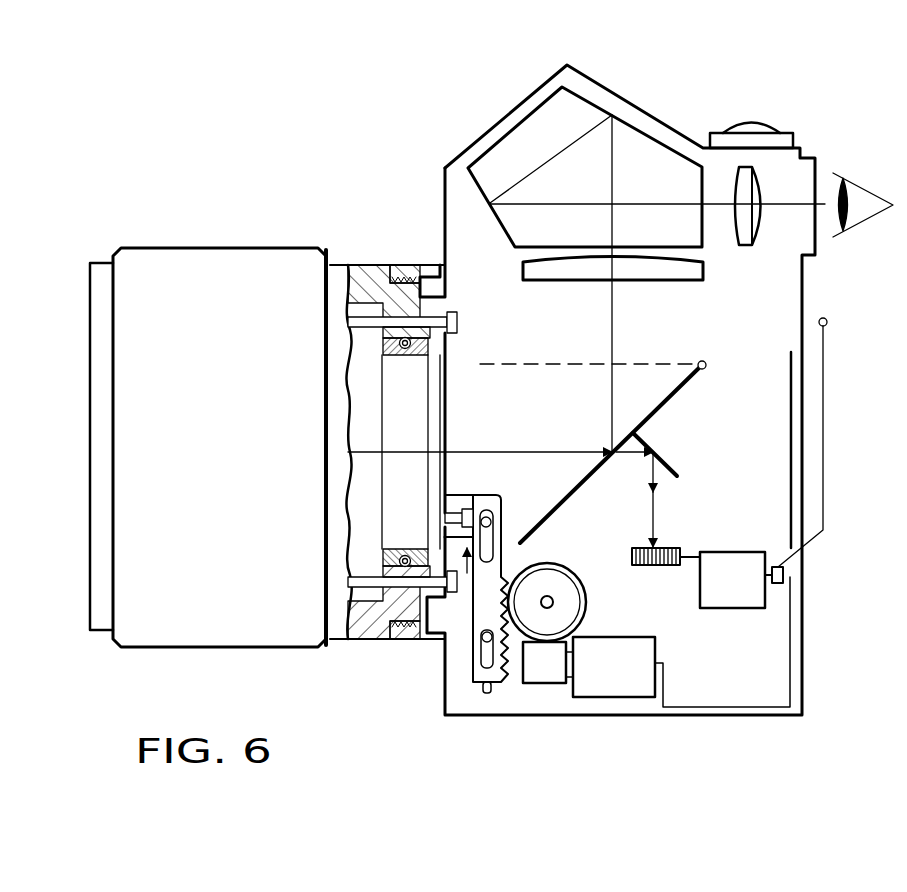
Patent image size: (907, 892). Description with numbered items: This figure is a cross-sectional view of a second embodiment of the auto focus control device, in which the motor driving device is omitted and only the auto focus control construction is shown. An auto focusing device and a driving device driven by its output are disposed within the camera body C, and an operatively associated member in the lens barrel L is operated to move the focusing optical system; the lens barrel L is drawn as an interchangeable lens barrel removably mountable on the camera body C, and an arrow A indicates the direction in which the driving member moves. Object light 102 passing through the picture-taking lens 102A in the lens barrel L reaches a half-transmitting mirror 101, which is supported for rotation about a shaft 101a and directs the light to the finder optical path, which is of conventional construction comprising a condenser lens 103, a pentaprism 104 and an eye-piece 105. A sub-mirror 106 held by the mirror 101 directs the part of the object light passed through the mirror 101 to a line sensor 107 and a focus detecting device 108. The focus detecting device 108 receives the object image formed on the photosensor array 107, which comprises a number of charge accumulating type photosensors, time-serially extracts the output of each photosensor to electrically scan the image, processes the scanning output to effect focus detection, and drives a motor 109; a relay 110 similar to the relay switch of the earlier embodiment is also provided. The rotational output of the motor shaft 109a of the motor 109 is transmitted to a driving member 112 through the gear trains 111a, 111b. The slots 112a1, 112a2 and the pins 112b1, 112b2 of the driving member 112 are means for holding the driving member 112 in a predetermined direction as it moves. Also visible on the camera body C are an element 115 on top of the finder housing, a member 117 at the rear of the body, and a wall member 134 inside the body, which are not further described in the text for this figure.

The camera body C is at (622, 100).
The lens barrel L is at (328, 647).
The direction of rack movement A is at (462, 587).
The picture-taking lens 102A is at (205, 248).
The object light 102 is at (493, 451).
The half-transmitting mirror 101 is at (645, 420).
The shaft 101a is at (705, 370).
The condenser lens 103 is at (673, 281).
The pentaprism 104 is at (520, 222).
The eye-piece 105 is at (757, 246).
The sub-mirror 106 is at (667, 456).
The line sensor 107 is at (669, 548).
The focus detecting device 108 is at (743, 551).
The motor 109 is at (623, 688).
The motor shaft 109a is at (571, 669).
The relay 110 is at (772, 586).
The gear train 111a is at (537, 668).
The gear train 111b is at (574, 577).
The driving member 112 is at (445, 617).
The slot 112a1 is at (483, 658).
The slot 112a2 is at (505, 562).
The pin 112b1 is at (476, 636).
The pin 112b2 is at (496, 518).
The display / dial 115 is at (720, 205).
The release switch 117 is at (828, 322).
The partition wall 134 is at (791, 388).